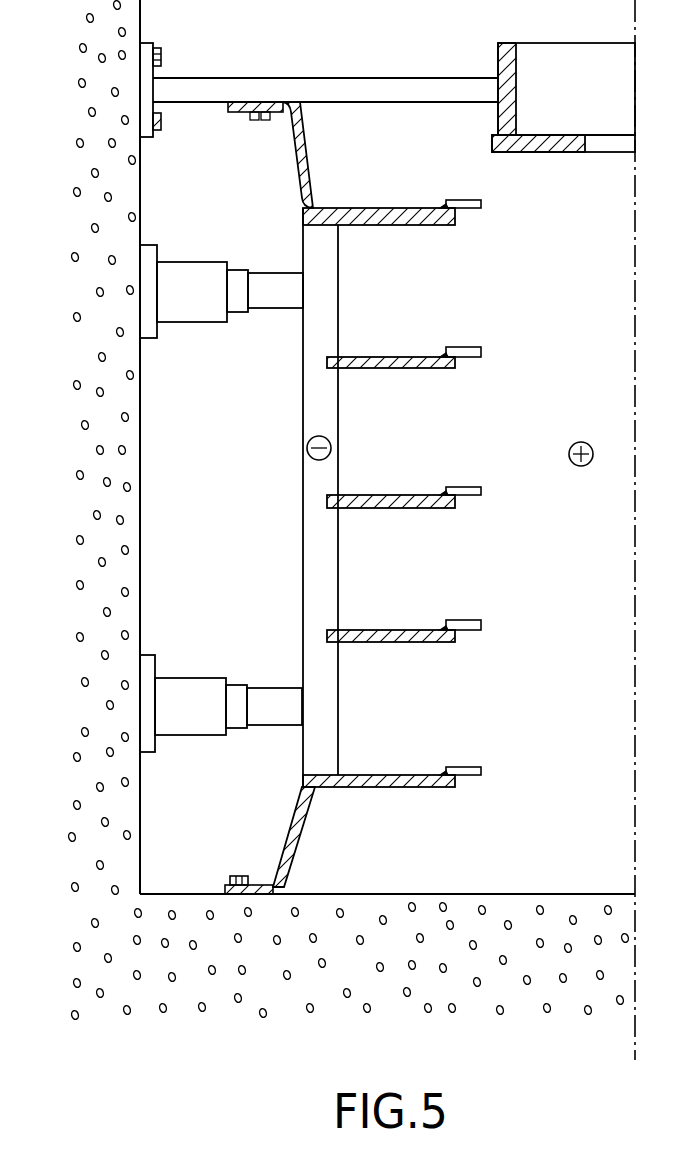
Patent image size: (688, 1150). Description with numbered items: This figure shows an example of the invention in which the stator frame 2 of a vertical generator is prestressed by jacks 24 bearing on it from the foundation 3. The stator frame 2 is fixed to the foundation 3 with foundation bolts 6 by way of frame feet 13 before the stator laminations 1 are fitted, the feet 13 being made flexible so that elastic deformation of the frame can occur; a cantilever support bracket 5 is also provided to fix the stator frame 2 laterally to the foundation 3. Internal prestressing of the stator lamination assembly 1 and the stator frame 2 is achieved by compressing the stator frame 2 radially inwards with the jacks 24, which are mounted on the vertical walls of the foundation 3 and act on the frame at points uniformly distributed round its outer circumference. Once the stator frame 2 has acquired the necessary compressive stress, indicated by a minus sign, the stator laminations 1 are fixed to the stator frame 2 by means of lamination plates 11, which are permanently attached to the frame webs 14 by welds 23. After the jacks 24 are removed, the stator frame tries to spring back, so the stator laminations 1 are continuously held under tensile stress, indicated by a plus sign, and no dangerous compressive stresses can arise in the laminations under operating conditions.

The stator laminations 1 is at (563, 257).
The stator frame 2 is at (319, 497).
The foundation 3 is at (108, 498).
The cantilever support bracket 5 is at (386, 92).
The foundation bolts 6 is at (162, 125).
The lamination plates 11 is at (483, 205).
The frame feet 13 is at (300, 170).
The frame web 14 is at (383, 216).
The welds 23 is at (444, 206).
The jacks 24 is at (207, 303).